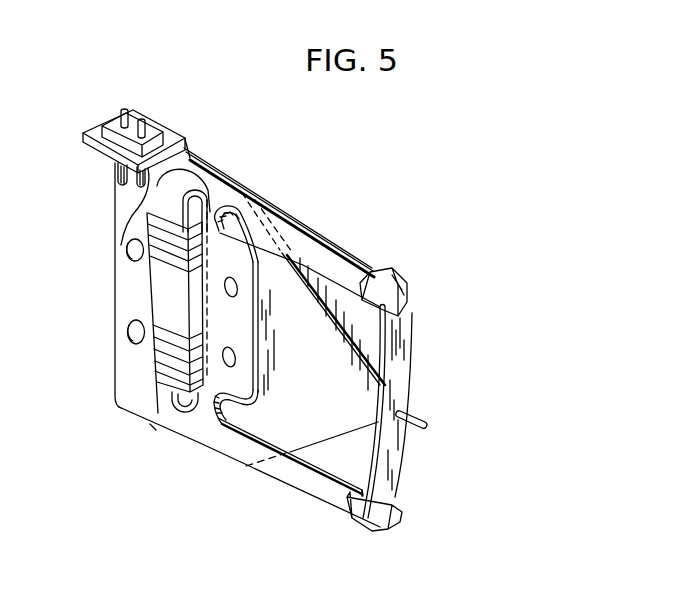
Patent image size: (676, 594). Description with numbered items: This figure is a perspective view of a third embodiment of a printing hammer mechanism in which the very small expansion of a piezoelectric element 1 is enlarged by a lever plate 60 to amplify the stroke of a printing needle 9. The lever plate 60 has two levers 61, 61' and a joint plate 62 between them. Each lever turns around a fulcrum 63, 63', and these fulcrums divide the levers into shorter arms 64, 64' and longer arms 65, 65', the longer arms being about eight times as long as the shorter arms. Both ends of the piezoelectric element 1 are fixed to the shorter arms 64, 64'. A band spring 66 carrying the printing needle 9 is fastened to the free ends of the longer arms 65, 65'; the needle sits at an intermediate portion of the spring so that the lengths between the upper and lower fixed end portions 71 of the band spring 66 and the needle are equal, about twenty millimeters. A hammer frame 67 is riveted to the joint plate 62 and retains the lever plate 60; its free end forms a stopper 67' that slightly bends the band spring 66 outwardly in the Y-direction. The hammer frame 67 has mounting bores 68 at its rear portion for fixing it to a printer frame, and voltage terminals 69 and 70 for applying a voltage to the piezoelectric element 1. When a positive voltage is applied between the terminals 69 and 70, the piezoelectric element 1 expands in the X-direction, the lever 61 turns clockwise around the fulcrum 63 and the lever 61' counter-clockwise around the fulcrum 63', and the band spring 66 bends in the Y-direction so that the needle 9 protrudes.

The piezoelectric element 1 is at (168, 322).
The printing needle 9 is at (428, 425).
The lever plate 60 is at (242, 186).
The lever 61 is at (302, 289).
The lever 61' is at (244, 460).
The joint plate 62 is at (247, 328).
The fulcrum 63 is at (278, 197).
The fulcrum 63' is at (205, 437).
The shorter arm 64 is at (195, 130).
The shorter arm 64' is at (144, 447).
The longer arm 65 is at (302, 269).
The longer arm 65' is at (277, 458).
The band spring 66 is at (395, 480).
The hammer frame 67 is at (142, 288).
The stopper 67' is at (249, 467).
The mounting bores 68 is at (126, 252).
The voltage terminal 69 is at (124, 111).
The voltage terminal 70 is at (143, 121).
The fixed end portion 71 is at (414, 294).